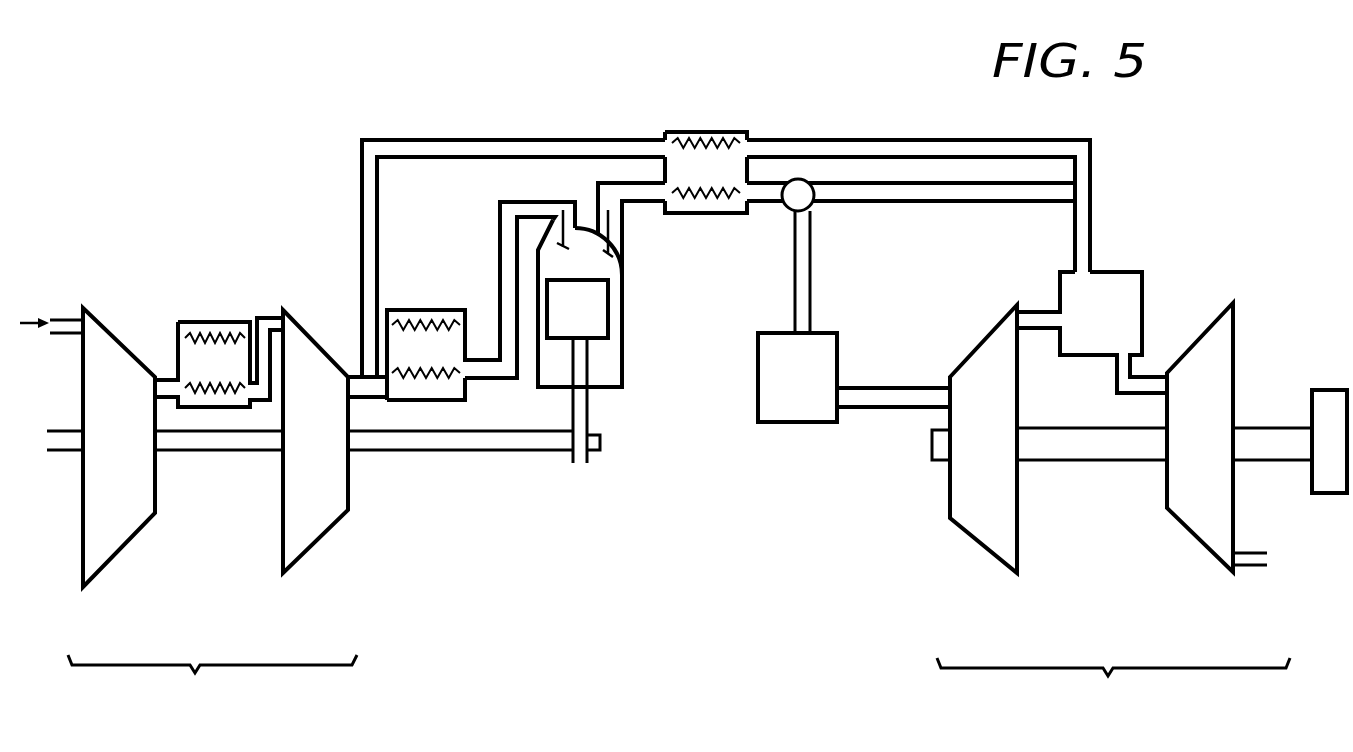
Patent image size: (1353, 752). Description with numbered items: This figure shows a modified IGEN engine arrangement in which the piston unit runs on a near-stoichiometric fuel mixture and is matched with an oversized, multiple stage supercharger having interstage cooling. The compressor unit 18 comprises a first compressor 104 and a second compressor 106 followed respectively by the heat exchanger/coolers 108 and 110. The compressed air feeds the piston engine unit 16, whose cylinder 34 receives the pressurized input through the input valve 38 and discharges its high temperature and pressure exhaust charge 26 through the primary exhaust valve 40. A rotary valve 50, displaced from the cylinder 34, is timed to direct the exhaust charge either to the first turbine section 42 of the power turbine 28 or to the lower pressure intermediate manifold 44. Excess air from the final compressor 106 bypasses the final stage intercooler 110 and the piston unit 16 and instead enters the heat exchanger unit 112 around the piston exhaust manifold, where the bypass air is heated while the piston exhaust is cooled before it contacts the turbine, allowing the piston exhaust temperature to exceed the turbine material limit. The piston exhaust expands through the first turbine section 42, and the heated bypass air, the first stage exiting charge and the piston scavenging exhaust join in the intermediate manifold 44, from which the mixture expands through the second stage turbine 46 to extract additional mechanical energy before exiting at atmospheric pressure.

The piston engine unit 16 is at (597, 336).
The compressor unit 18 is at (296, 485).
The exhaust charge 26 is at (806, 397).
The power turbine 28 is at (1139, 445).
The cylinder 34 is at (568, 373).
The input valve 38 is at (563, 247).
The primary exhaust valve 40 is at (607, 258).
The first turbine section 42 is at (1020, 547).
The intermediate manifold 44 is at (1120, 285).
The second stage turbine 46 is at (1235, 530).
The rotary valve 50 is at (812, 210).
The first compressor 104 is at (90, 580).
The second compressor 106 is at (315, 553).
The heat exchanger/cooler 108 is at (200, 322).
The heat exchanger/cooler 110 is at (427, 308).
The heat exchanger unit 112 is at (713, 132).